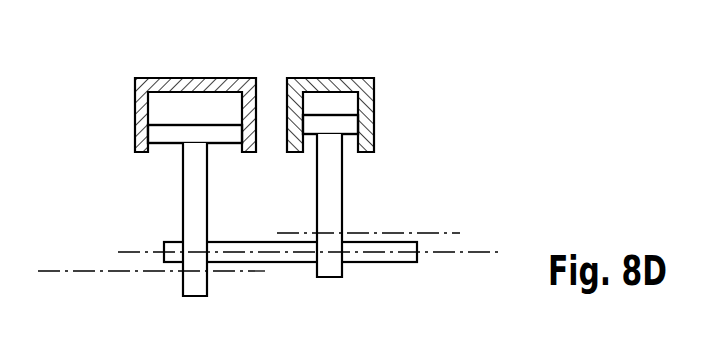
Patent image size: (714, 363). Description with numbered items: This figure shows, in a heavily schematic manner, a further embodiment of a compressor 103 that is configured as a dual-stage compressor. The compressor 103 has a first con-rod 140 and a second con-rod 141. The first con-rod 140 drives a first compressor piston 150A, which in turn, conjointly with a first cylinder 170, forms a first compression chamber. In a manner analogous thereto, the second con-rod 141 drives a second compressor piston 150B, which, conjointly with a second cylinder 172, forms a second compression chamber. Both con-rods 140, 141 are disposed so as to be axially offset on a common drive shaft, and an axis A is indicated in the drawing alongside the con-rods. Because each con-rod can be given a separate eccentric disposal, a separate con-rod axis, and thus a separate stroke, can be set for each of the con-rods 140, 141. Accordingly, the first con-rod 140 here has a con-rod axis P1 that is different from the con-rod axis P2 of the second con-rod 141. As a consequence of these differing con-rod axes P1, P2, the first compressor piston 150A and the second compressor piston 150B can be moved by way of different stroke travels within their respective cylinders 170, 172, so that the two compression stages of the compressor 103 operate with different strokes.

The compressor 103 is at (523, 97).
The first cylinder 170 is at (146, 101).
The first compressor piston 150A is at (166, 133).
The second cylinder 172 is at (372, 96).
The second compressor piston 150B is at (347, 124).
The first con-rod 140 is at (183, 201).
The second con-rod 141 is at (342, 201).
The con-rod axis P1 is at (55, 270).
The con-rod axis P2 is at (444, 233).
The axis A is at (488, 252).